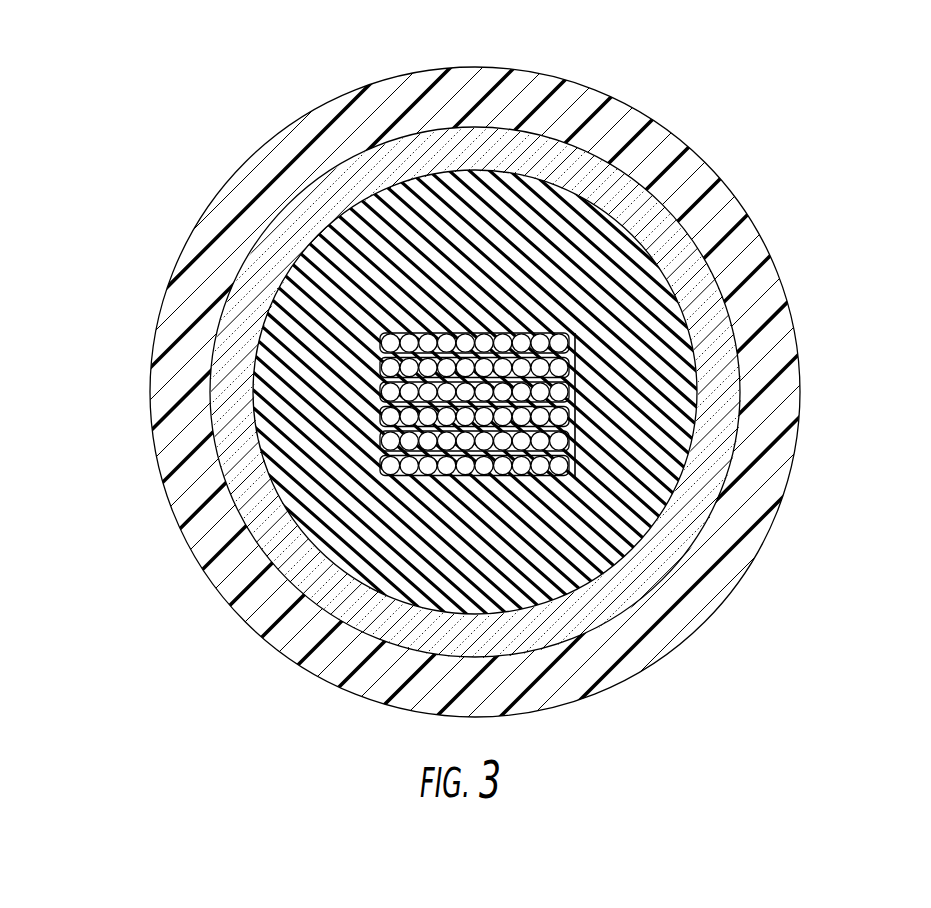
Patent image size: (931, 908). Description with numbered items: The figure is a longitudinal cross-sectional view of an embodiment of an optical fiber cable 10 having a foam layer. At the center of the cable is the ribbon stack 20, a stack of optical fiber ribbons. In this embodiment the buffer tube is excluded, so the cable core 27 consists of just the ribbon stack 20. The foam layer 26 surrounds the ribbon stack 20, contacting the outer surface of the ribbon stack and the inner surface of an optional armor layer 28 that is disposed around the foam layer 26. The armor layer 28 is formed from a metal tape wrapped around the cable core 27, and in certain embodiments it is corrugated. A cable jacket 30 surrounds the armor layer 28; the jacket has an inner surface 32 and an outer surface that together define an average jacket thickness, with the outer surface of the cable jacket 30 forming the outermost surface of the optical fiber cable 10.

The optical fiber cable 10 is at (122, 92).
The ribbon stack 20 is at (573, 400).
The foam layer 26 is at (580, 230).
The cable core 27 is at (550, 483).
The armor layer 28 is at (317, 223).
The cable jacket 30 is at (173, 449).
The inner surface 32 is at (217, 325).